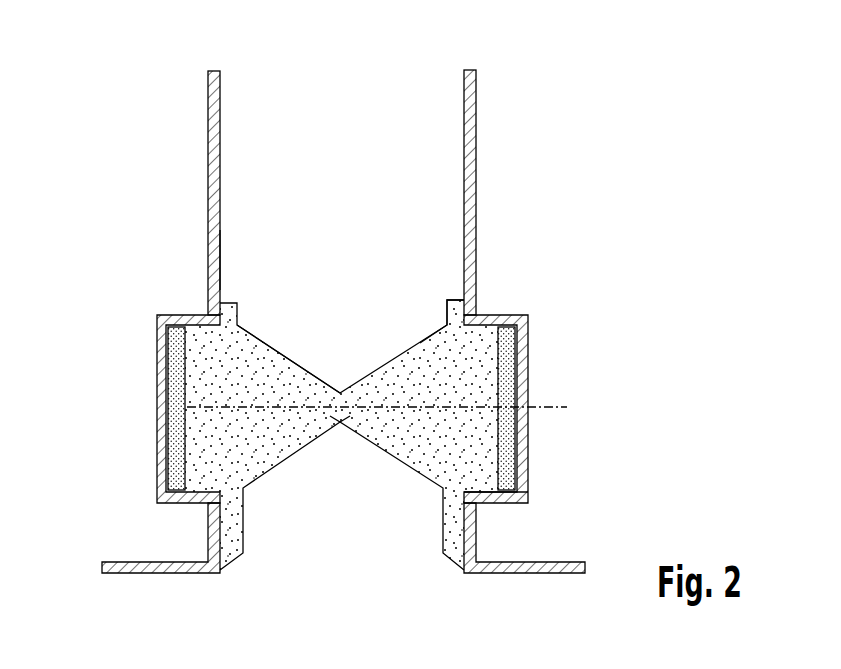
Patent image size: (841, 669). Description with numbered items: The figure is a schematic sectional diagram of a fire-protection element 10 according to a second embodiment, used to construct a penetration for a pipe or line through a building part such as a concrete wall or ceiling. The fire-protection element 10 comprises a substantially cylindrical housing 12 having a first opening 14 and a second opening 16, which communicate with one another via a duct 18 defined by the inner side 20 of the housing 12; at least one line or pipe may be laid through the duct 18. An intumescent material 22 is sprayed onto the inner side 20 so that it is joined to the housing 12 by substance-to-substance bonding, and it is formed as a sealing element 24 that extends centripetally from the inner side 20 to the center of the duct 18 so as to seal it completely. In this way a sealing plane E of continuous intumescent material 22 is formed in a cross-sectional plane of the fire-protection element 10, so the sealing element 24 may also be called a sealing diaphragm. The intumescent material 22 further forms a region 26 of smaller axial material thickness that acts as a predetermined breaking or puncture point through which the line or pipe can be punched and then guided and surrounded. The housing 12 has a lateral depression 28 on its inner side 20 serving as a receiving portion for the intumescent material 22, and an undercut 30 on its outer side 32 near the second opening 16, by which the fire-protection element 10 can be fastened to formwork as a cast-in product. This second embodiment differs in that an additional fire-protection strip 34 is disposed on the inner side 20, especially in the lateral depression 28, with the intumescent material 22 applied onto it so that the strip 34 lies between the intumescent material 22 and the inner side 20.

The fire-protection element 10 is at (85, 93).
The housing 12 is at (476, 117).
The first opening 14 is at (255, 92).
The second opening 16 is at (334, 562).
The duct 18 is at (405, 218).
The inner side 20 is at (232, 255).
The intumescent material 22 is at (453, 345).
The sealing element 24 is at (282, 372).
The region 26 is at (334, 414).
The lateral depression 28 is at (487, 500).
The undercut 30 is at (174, 537).
The outer side 32 is at (146, 411).
The additional fire-protection strip 34 is at (517, 415).
The sealing plane E is at (557, 405).